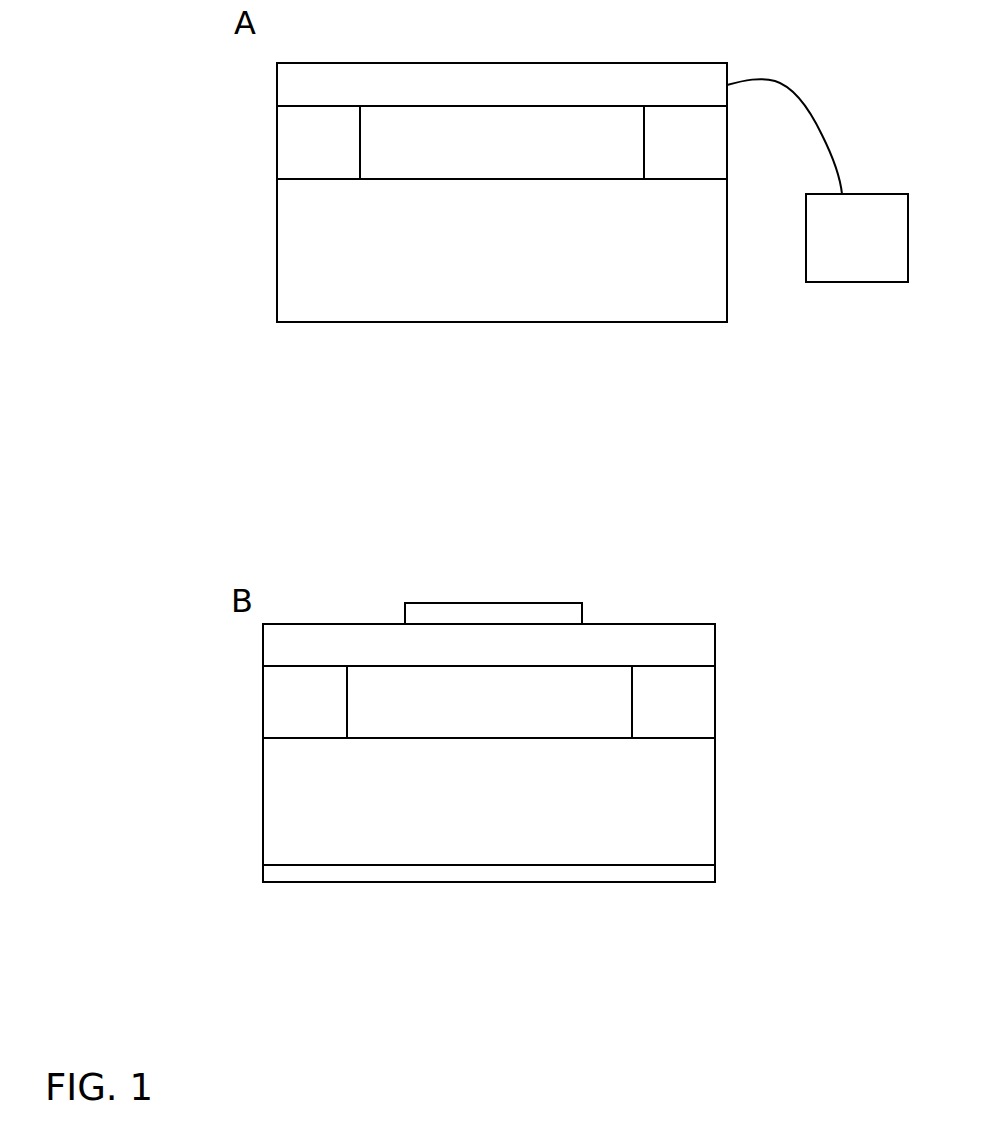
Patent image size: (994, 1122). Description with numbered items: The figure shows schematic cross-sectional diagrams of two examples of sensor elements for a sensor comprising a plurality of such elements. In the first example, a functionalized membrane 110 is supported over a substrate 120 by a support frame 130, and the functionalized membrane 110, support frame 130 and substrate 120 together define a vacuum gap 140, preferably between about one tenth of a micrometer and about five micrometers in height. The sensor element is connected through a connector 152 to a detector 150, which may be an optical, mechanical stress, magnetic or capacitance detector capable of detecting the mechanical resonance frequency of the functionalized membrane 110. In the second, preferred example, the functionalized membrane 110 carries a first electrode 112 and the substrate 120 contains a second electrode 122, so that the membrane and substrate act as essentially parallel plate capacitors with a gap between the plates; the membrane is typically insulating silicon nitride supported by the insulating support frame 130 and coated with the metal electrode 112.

The functionalized membrane 110 is at (463, 100).
The first electrode 112 is at (496, 603).
The substrate 120 is at (473, 262).
The second electrode 122 is at (520, 882).
The support frame 130 is at (293, 152).
The vacuum gap 140 is at (463, 159).
The detector 150 is at (838, 252).
The connector 152 is at (797, 93).